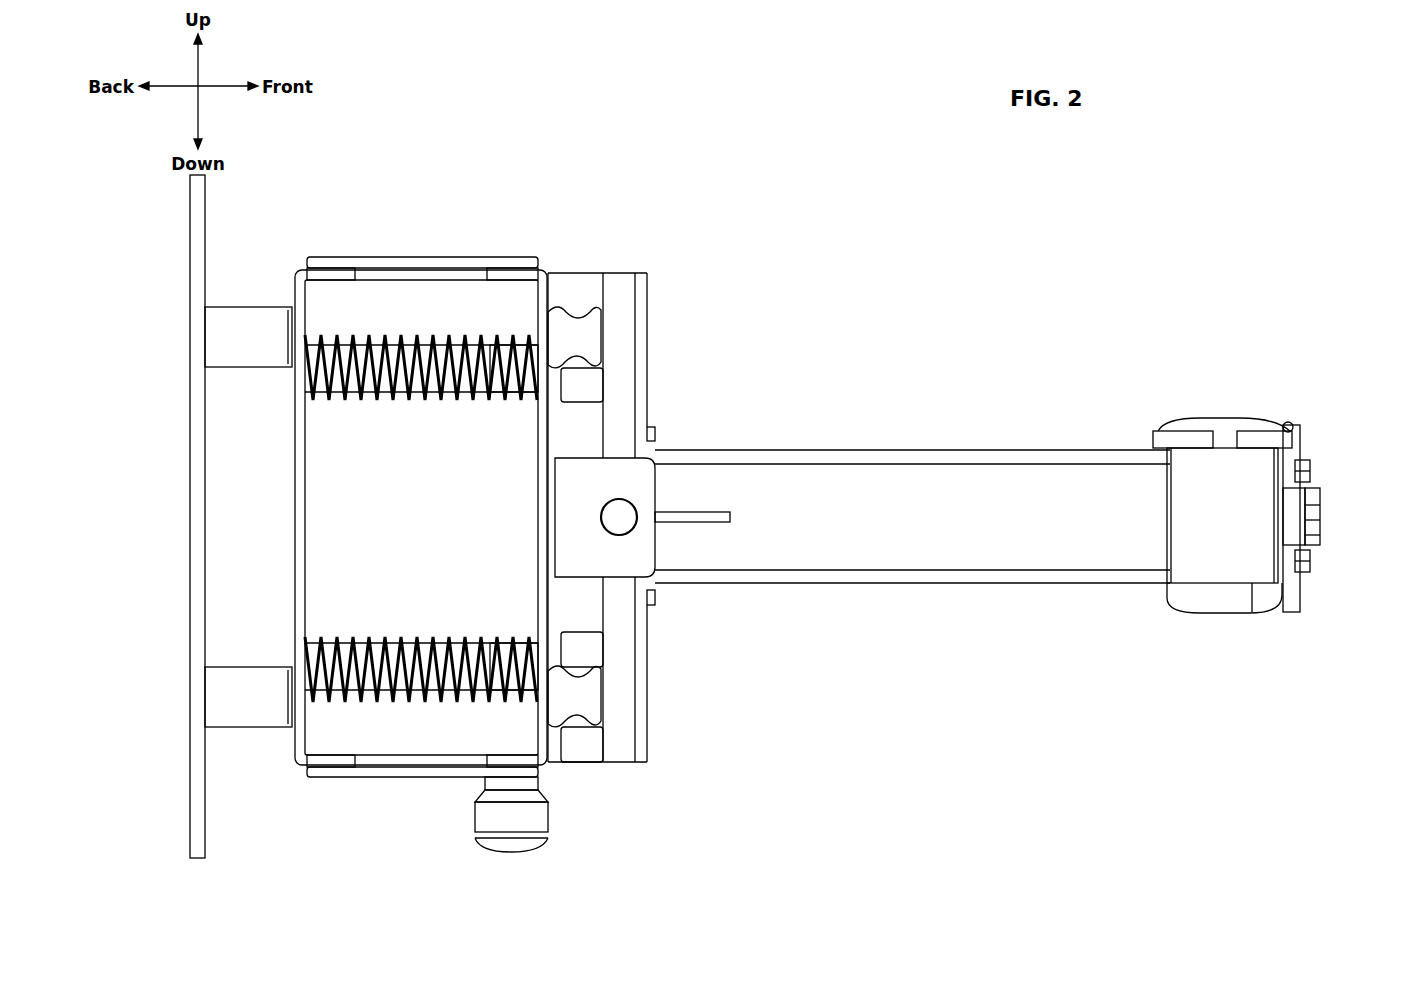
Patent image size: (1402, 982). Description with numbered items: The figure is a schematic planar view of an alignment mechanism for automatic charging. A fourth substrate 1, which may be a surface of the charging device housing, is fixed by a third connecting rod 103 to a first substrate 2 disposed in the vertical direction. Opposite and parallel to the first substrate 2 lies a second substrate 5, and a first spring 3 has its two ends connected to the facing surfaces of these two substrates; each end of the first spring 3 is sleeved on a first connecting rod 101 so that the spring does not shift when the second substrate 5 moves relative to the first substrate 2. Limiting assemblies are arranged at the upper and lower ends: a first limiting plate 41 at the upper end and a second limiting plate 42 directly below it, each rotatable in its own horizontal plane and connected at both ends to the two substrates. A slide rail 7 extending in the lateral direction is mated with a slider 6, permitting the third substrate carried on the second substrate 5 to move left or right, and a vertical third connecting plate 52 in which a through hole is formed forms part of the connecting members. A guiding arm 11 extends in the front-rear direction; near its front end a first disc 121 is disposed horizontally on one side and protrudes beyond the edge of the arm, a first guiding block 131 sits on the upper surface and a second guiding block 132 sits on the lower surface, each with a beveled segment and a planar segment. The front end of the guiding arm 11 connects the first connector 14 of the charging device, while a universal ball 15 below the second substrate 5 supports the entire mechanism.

The fourth substrate 1 is at (203, 232).
The third connecting rod 103 is at (240, 335).
The first substrate 2 is at (300, 520).
The first limiting plate 41 is at (415, 265).
The second limiting plate 42 is at (413, 770).
The first spring 3 is at (467, 330).
The first connecting rod 101 is at (525, 350).
The slider 6 is at (595, 292).
The slide rail 7 is at (570, 335).
The second substrate 5 is at (545, 485).
The third connecting plate 52 is at (628, 482).
The guiding arm 11 is at (976, 510).
The first disc 121 is at (1183, 438).
The first guiding block 131 is at (1225, 428).
The first connector 14 is at (1312, 525).
The second guiding block 132 is at (1215, 602).
The universal ball 15 is at (512, 820).